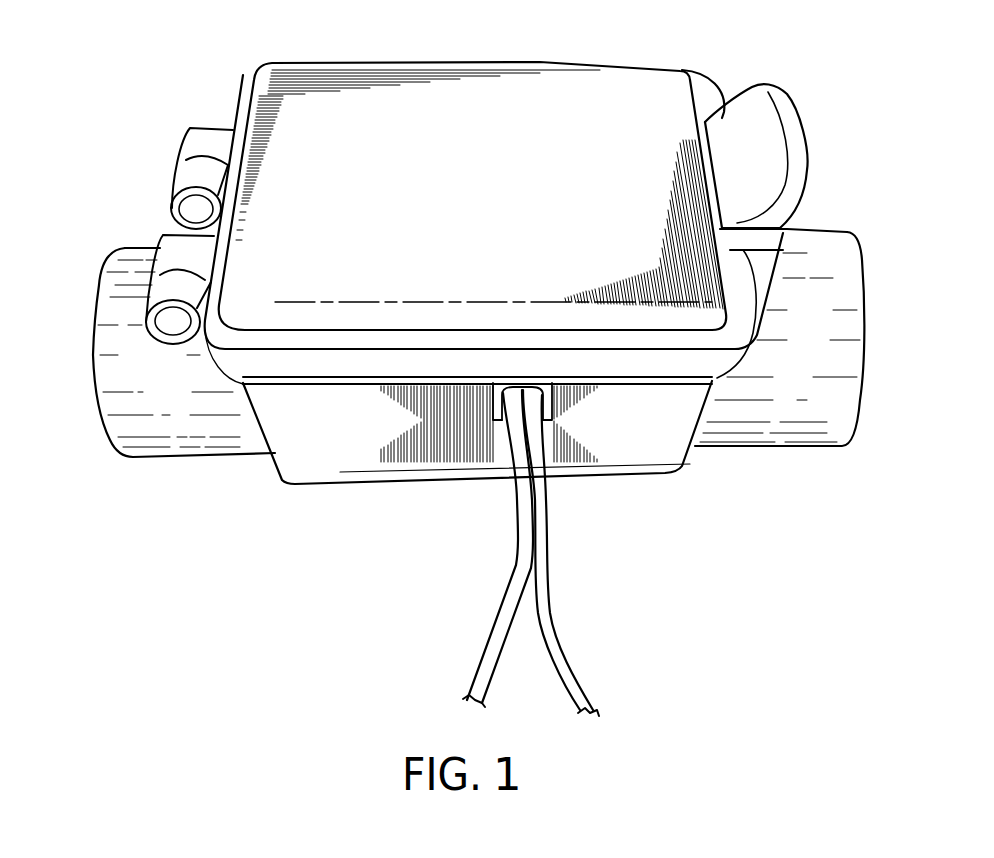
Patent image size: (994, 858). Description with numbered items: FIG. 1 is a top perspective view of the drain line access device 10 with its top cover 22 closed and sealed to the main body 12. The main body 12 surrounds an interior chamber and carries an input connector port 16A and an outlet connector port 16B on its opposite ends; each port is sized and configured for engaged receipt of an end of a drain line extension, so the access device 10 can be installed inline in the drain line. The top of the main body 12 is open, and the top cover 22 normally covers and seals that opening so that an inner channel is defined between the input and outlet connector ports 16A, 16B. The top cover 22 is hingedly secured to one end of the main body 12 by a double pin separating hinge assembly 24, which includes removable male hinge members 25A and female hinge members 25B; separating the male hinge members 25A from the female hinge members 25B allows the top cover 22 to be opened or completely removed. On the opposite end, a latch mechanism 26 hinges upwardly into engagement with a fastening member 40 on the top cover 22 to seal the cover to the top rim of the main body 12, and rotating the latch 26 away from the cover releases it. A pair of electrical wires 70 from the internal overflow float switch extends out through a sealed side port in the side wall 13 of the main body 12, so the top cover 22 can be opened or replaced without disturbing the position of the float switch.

The access device 10 is at (186, 99).
The main body 12 is at (482, 482).
The side wall 13 is at (477, 442).
The input connector port 16A is at (770, 415).
The outlet connector port 16B is at (217, 438).
The top cover 22 is at (280, 87).
The double pin separating hinge assembly 24 is at (132, 218).
The male hinge members 25A is at (193, 147).
The female hinge members 25B is at (180, 188).
The latch mechanism 26 is at (787, 118).
The fastening member 40 is at (778, 236).
The electrical wires 70 is at (497, 614).